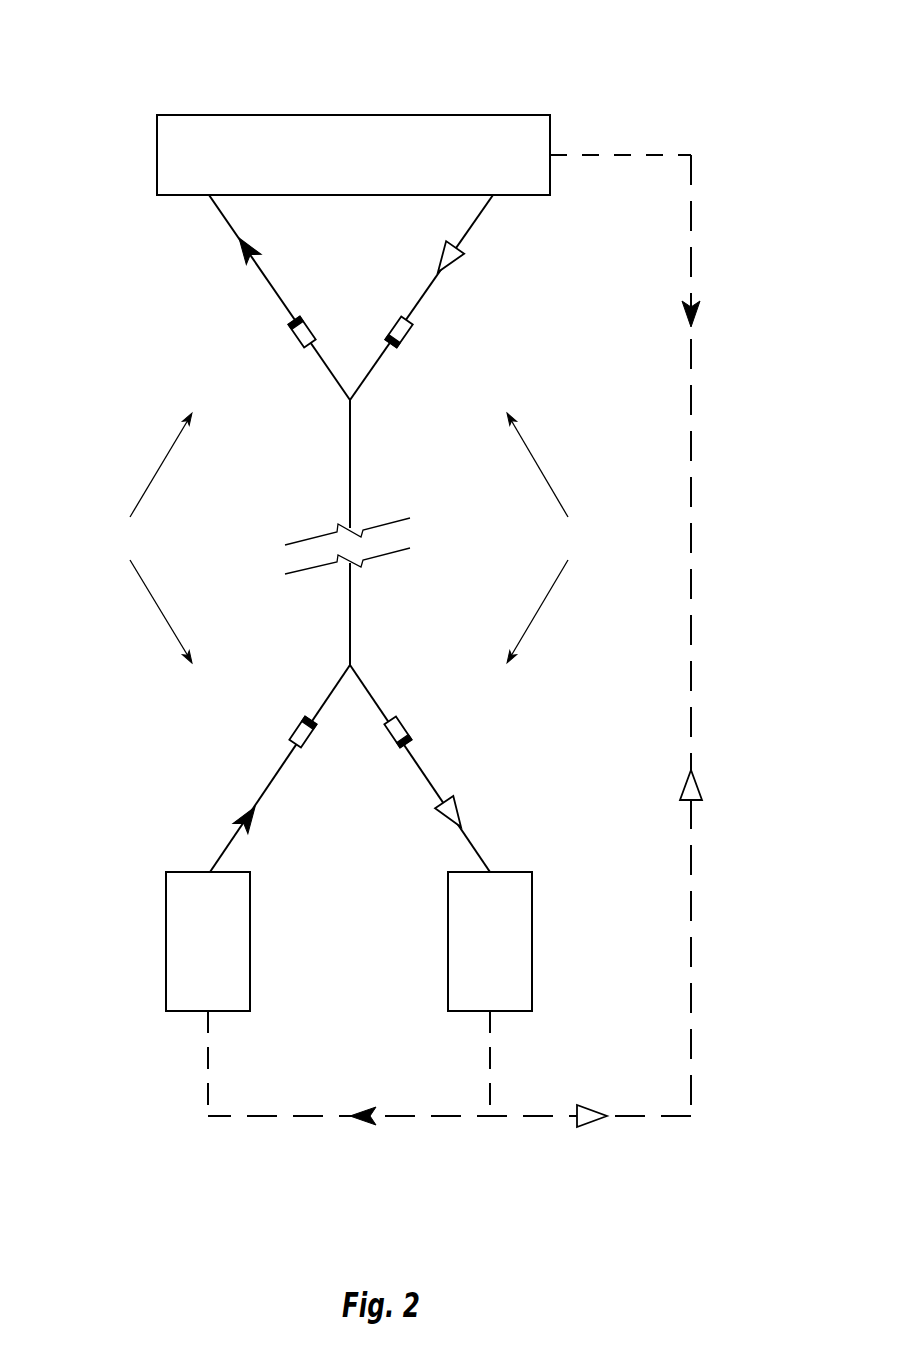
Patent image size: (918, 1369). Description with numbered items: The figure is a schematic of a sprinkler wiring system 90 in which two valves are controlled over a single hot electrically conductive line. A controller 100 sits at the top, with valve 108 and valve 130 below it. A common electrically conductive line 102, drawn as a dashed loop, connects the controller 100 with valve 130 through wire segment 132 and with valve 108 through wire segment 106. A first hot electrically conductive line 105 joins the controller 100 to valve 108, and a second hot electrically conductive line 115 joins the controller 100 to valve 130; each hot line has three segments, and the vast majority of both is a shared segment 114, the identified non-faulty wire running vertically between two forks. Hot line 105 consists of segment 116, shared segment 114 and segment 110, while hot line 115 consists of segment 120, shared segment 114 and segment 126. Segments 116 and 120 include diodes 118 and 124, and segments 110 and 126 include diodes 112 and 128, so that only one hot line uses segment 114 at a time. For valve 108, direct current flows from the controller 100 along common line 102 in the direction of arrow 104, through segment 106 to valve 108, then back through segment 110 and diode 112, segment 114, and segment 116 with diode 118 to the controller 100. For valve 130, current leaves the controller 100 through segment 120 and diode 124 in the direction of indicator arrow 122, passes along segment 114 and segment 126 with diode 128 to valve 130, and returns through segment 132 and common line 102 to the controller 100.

The system 90 is at (662, 42).
The controller 100 is at (462, 122).
The common electrically conductive line 102 is at (622, 152).
The arrow 104 is at (243, 252).
The first hot electrically conductive line 105 is at (143, 538).
The wire segment 106 is at (206, 1060).
The valve 108 is at (166, 940).
The segment 110 is at (332, 692).
The diode 112 is at (292, 730).
The shared segment 114 is at (352, 460).
The second hot electrically conductive line 115 is at (555, 538).
The segment 116 is at (330, 378).
The diode 118 is at (290, 337).
The segment 120 is at (370, 377).
The indicator arrow 122 is at (463, 262).
The diode 124 is at (410, 337).
The segment 126 is at (370, 692).
The diode 128 is at (408, 729).
The valve 130 is at (534, 940).
The wire segment 132 is at (492, 1058).